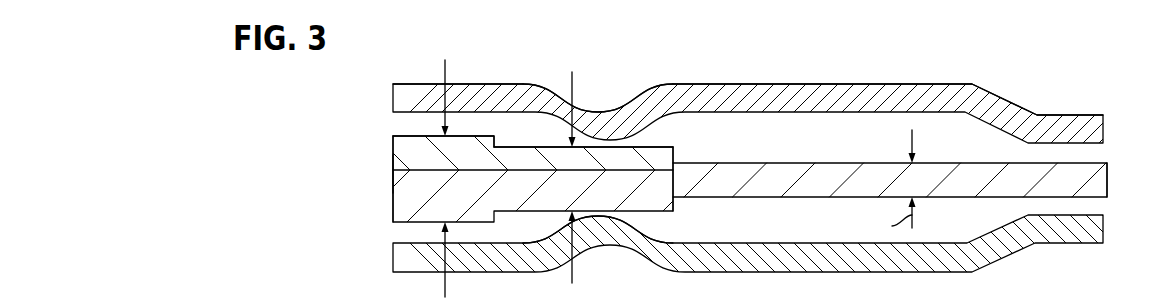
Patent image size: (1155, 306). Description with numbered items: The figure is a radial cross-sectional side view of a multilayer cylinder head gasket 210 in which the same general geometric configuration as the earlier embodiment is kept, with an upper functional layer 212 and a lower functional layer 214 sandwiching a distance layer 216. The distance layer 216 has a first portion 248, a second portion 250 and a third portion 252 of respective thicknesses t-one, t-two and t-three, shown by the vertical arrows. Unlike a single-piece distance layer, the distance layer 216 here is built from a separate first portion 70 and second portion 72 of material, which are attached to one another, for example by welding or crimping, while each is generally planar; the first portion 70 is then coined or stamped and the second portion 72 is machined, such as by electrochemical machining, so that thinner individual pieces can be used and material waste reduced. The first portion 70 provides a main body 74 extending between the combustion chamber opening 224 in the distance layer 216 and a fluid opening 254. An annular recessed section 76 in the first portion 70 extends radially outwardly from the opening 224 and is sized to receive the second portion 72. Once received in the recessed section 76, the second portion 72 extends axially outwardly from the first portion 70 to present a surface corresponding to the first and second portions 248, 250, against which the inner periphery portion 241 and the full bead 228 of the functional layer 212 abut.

The first portion 70 is at (393, 212).
The second portion 72 is at (393, 145).
The main body 74 is at (840, 163).
The annular recessed section 76 is at (673, 163).
The multilayer gasket 210 is at (877, 61).
The functional layer 212 is at (497, 83).
The functional layer 214 is at (463, 272).
The distance layer 216 is at (389, 155).
The combustion chamber opening 224 is at (393, 150).
The full bead 228 is at (636, 136).
The inner periphery portion 241 is at (505, 84).
The first portion of distance layer 248 is at (437, 136).
The second portion of distance layer 250 is at (523, 147).
The third portion of distance layer 252 is at (767, 163).
The fluid opening 254 is at (1108, 182).